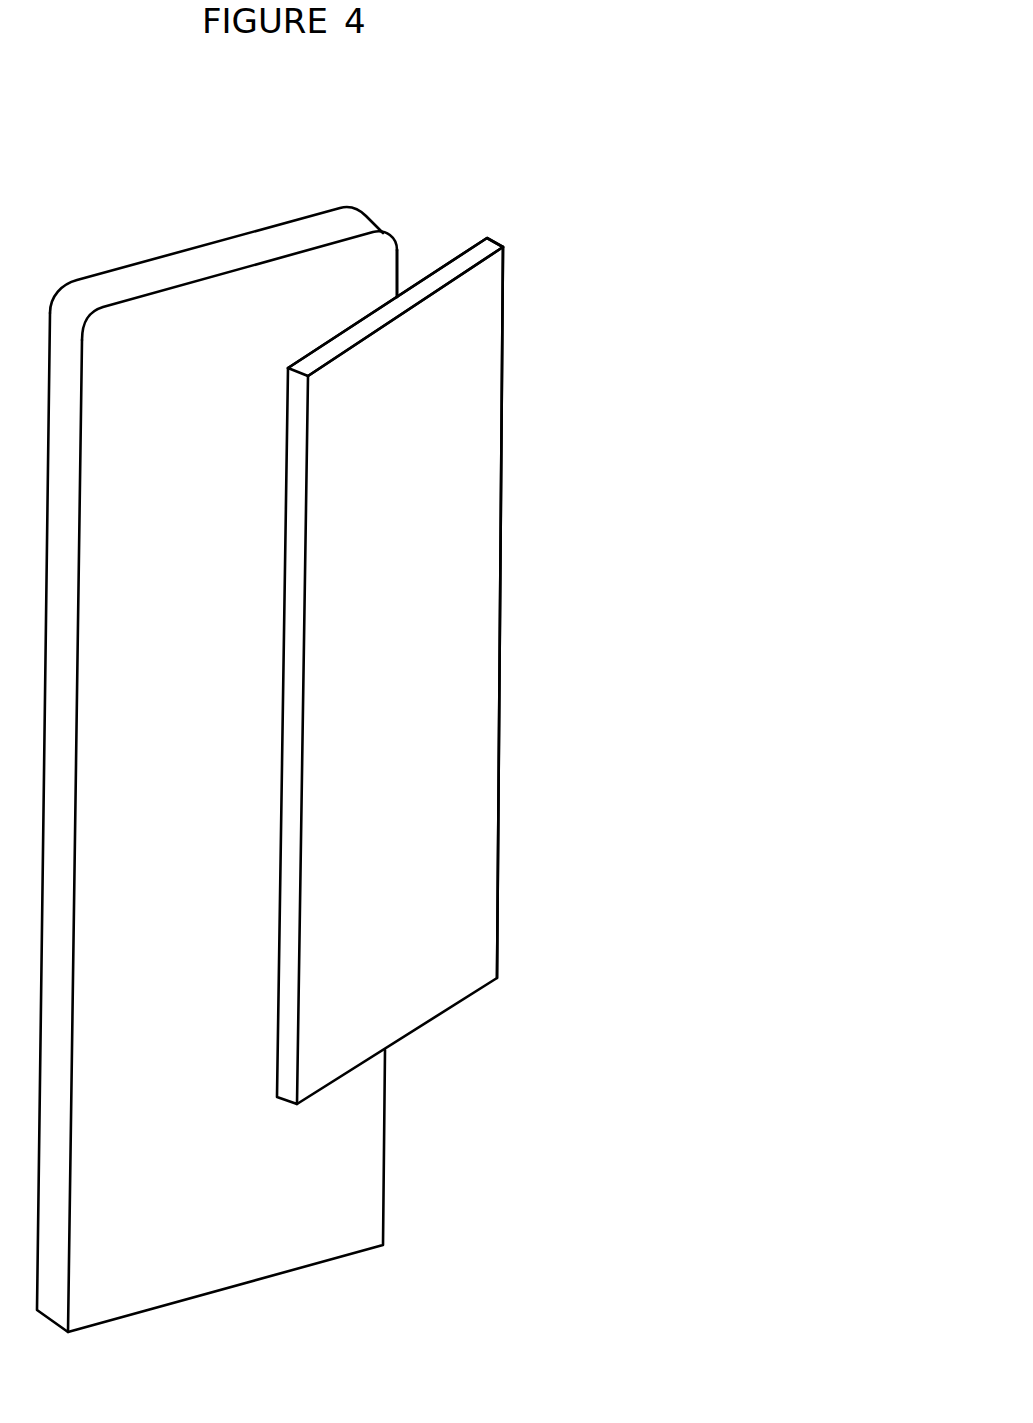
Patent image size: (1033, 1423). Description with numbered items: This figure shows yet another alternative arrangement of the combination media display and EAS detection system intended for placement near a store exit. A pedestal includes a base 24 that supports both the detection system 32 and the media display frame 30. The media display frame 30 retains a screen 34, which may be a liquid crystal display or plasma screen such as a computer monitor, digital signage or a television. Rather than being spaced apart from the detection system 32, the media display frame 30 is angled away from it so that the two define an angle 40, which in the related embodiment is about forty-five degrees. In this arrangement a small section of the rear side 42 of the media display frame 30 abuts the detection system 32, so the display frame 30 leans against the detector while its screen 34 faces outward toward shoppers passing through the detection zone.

The base 24 is at (384, 1197).
The media display frame 30 is at (437, 280).
The detection system 32 is at (272, 250).
The screen 34 is at (505, 458).
The angle 40 is at (395, 298).
The rear side 42 is at (453, 258).